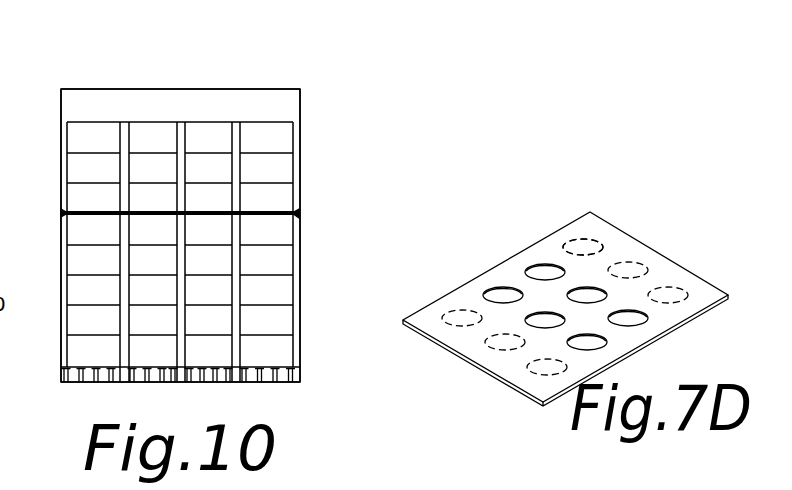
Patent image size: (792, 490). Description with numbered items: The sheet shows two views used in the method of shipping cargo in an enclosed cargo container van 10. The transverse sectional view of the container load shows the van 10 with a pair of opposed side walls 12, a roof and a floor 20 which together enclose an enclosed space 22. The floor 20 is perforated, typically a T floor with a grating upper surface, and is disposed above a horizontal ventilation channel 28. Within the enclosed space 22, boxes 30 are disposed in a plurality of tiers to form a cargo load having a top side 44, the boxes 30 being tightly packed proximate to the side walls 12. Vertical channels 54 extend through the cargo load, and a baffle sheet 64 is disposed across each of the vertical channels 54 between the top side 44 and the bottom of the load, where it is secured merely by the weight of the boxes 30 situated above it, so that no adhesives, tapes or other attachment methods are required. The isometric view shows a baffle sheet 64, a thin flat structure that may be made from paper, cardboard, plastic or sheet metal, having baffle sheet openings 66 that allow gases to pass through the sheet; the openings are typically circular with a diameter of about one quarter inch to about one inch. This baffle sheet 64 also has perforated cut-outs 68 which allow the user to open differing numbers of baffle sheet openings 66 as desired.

In FIG. 10, the cargo container van 10 is at (80, 84).
In FIG. 10, the side walls 12 is at (60, 283).
In FIG. 10, the floor 20 is at (140, 372).
In FIG. 10, the enclosed space 22 is at (278, 106).
In FIG. 10, the horizontal ventilation channel 28 is at (260, 385).
In FIG. 10, the boxes 30 is at (268, 292).
In FIG. 10, the top side 44 is at (80, 121).
In FIG. 10, the vertical channels 54 is at (123, 128).
In FIG. 10, the baffle sheet 64 is at (252, 212).
In FIG. 7D, the baffle sheet 64 is at (670, 252).
In FIG. 7D, the baffle sheet openings 66 is at (543, 268).
In FIG. 7D, the perforated cut-outs 68 is at (585, 244).